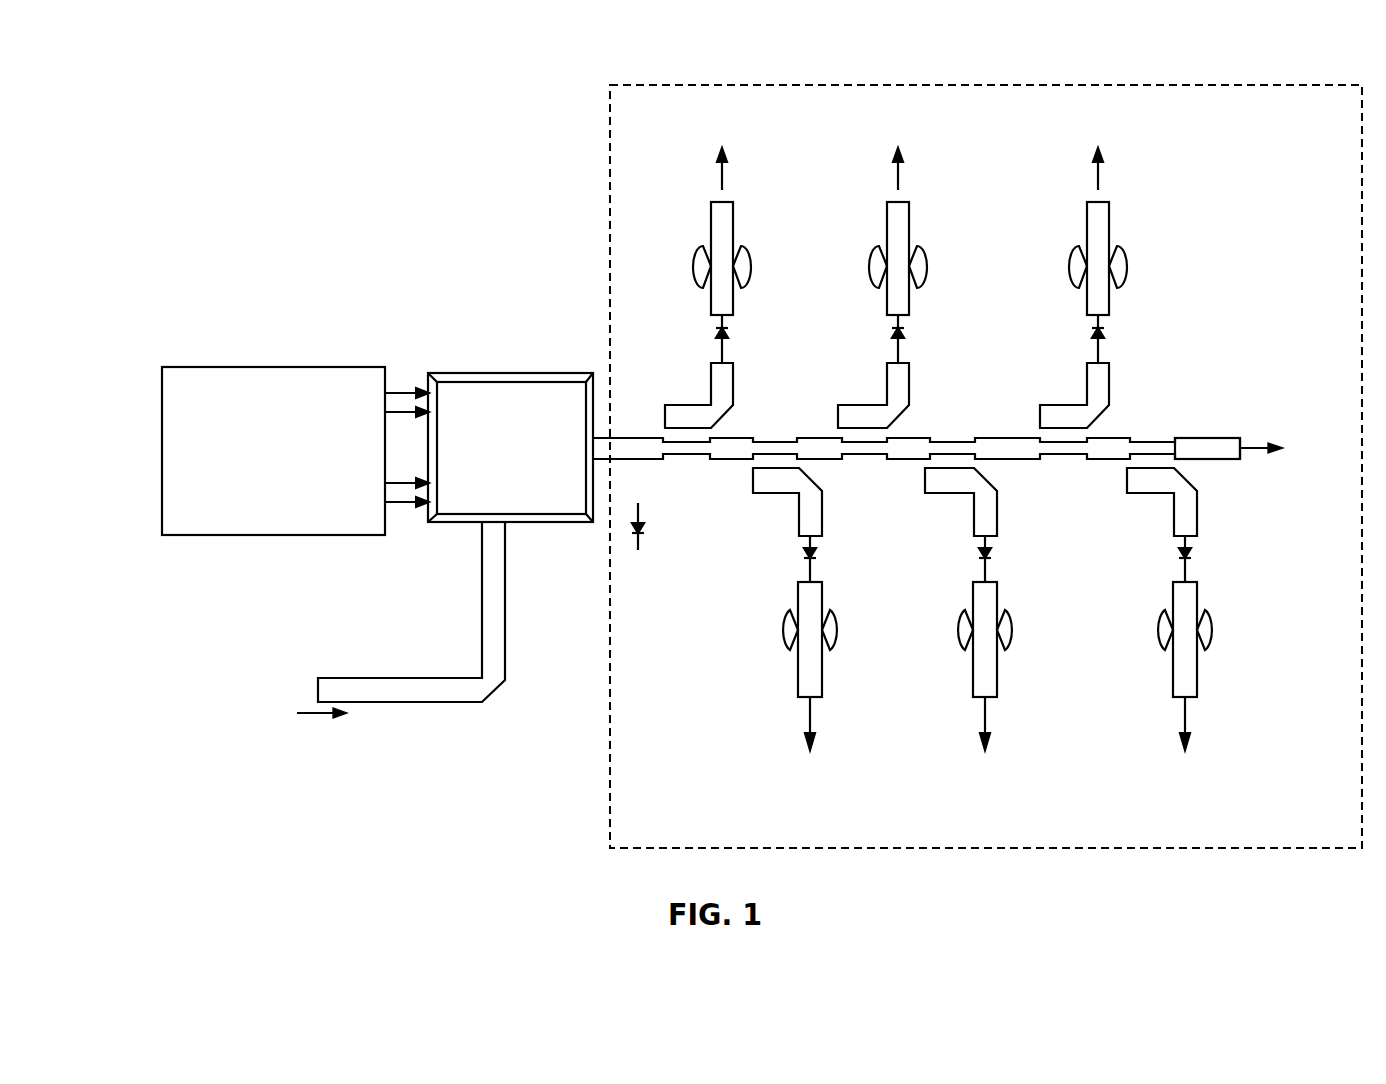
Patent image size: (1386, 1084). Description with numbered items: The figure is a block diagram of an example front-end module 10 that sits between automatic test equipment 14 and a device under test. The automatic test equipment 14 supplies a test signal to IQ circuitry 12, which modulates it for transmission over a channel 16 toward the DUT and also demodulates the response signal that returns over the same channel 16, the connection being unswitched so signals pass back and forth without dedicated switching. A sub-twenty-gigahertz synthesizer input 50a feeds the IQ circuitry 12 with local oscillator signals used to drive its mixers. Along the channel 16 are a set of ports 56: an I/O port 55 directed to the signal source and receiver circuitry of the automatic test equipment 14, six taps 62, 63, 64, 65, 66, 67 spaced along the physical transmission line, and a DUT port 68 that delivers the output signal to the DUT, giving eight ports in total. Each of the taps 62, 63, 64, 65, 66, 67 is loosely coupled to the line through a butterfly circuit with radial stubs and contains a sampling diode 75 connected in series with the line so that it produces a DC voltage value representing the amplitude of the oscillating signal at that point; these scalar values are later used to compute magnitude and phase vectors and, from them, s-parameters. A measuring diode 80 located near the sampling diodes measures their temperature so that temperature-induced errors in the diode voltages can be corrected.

The front-end module 10 is at (392, 150).
The IQ circuitry 12 is at (487, 373).
The automatic test equipment 14 is at (230, 367).
The channel 16 is at (782, 440).
The sub-20 GHz synthesizer input 50a is at (272, 678).
The I/O port 55 is at (648, 452).
The ports 56 is at (609, 112).
The tap 62 is at (680, 410).
The tap 63 is at (810, 507).
The tap 64 is at (863, 420).
The tap 65 is at (990, 512).
The tap 66 is at (1055, 413).
The tap 67 is at (1188, 512).
The DUT port 68 is at (1218, 448).
The diode 75 is at (813, 555).
The measuring diode 80 is at (663, 575).